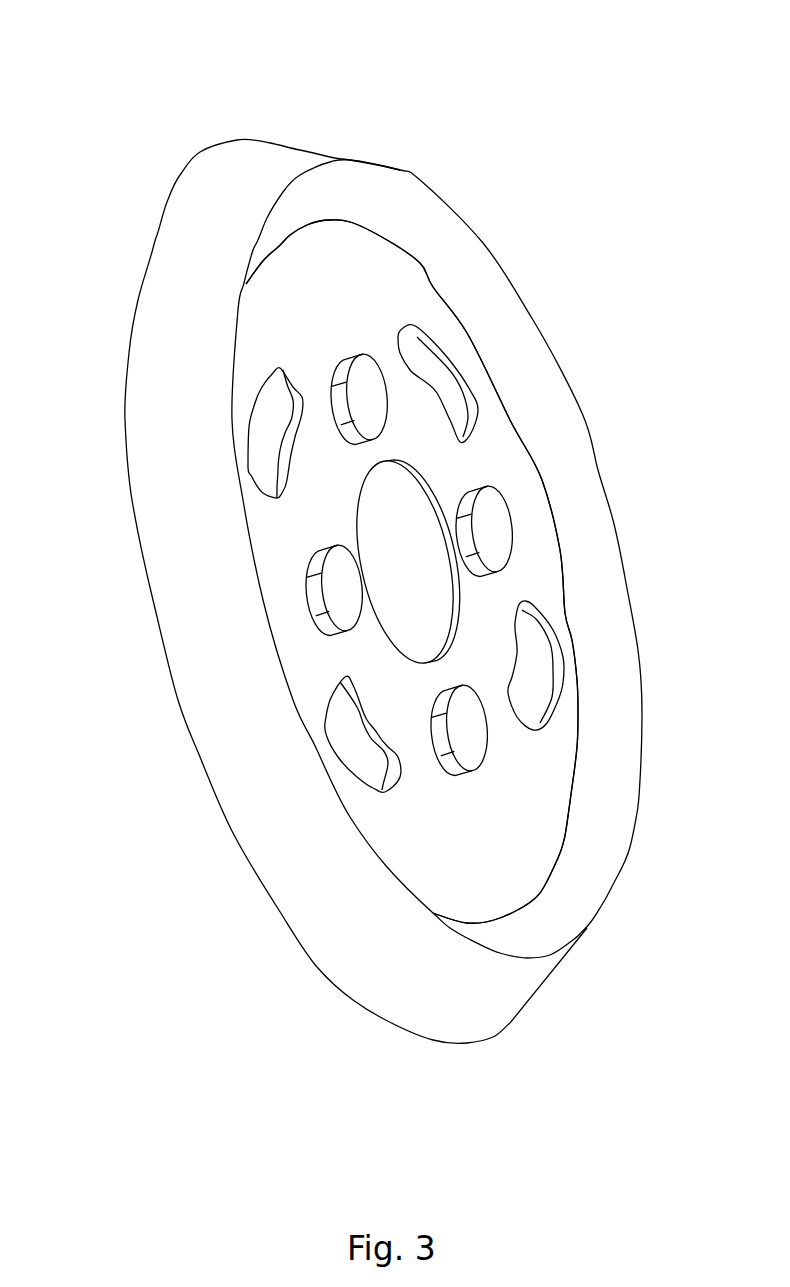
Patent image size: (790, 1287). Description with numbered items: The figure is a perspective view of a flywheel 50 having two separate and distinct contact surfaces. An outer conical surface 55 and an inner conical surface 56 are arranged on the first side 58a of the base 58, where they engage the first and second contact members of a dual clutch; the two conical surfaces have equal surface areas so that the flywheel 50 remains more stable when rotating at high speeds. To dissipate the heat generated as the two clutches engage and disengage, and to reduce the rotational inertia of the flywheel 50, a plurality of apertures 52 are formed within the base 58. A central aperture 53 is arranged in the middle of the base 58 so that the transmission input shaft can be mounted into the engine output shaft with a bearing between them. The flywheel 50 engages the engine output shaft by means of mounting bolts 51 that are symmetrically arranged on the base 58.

The flywheel 50 is at (622, 77).
The mounting bolts 51 is at (337, 367).
The apertures 52 is at (257, 408).
The aperture 53 is at (393, 527).
The outer conical surface 55 is at (238, 209).
The inner conical surface 56 is at (451, 254).
The base 58 is at (522, 825).
The first side 58a is at (496, 860).